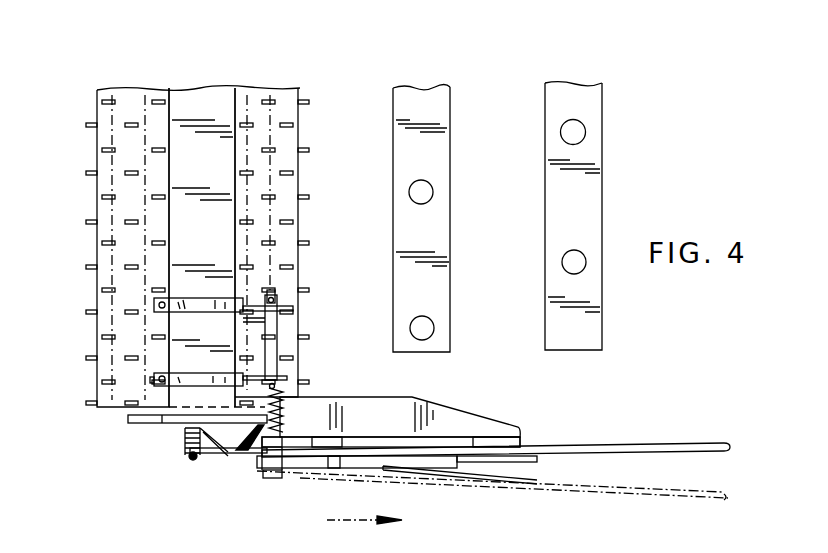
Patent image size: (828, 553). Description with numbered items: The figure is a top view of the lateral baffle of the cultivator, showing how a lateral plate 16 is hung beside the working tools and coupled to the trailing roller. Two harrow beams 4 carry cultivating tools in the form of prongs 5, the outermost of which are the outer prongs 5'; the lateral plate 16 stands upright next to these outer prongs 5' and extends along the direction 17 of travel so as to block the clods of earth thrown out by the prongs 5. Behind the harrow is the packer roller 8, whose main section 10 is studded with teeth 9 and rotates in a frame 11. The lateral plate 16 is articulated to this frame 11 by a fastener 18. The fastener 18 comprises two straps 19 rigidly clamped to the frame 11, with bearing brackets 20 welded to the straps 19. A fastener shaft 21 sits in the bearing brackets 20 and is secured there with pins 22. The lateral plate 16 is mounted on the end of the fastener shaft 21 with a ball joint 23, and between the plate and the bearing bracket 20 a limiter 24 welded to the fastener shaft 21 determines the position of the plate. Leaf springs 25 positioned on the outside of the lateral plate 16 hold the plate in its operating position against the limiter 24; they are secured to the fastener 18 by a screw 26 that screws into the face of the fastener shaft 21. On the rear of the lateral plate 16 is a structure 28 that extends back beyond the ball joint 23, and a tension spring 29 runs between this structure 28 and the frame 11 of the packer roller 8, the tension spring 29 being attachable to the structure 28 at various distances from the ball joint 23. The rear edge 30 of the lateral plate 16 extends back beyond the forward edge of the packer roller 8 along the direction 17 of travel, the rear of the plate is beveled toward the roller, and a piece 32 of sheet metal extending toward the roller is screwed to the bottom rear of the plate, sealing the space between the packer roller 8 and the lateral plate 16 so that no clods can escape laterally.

The harrow beam 4 is at (430, 112).
The prong 5 is at (604, 197).
The outer prong 5' is at (450, 260).
The packer roller 8 is at (130, 108).
The teeth 9 is at (108, 197).
The main section 10 is at (280, 107).
The frame 11 is at (198, 103).
The lateral plate 16 is at (590, 445).
The direction of travel 17 is at (343, 520).
The fastener 18 is at (252, 430).
The strap 19 is at (165, 370).
The bearing bracket 20 is at (263, 312).
The fastener shaft 21 is at (270, 327).
The pin 22 is at (277, 302).
The ball joint 23 is at (257, 487).
The limiter 24 is at (485, 425).
The leaf spring 25 is at (383, 465).
The screw 26 is at (275, 477).
The structure 28 is at (208, 455).
The tension spring 29 is at (187, 430).
The rear edge 30 is at (220, 453).
The piece of sheet metal 32 is at (188, 440).